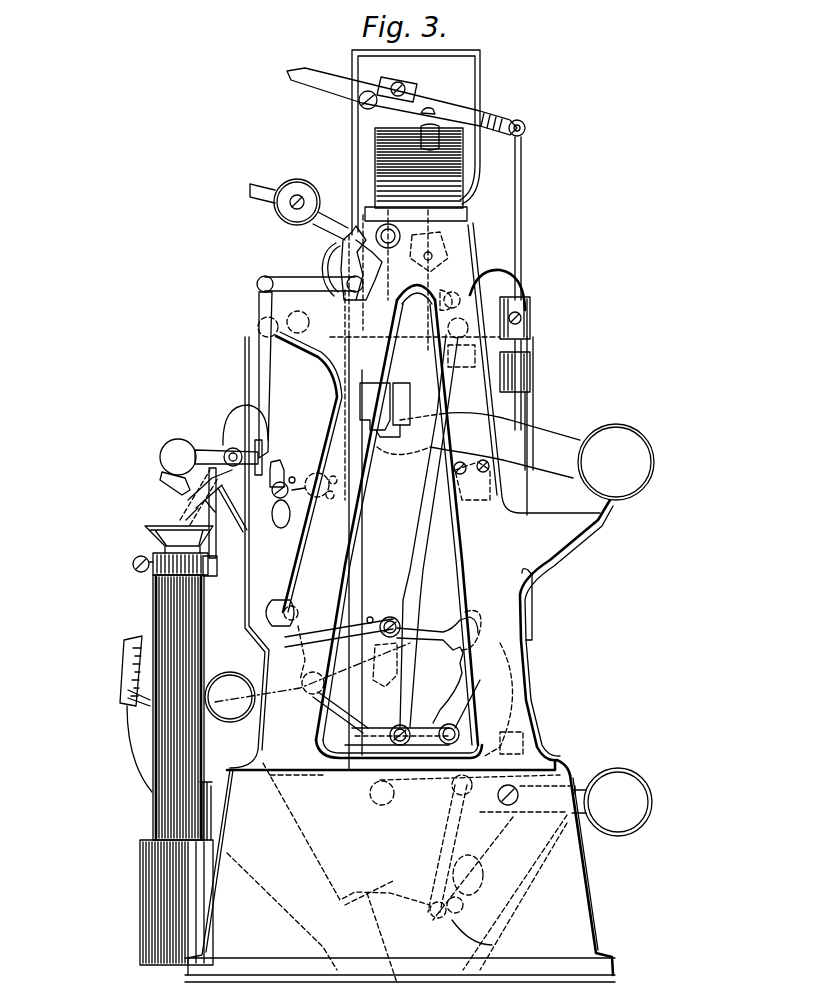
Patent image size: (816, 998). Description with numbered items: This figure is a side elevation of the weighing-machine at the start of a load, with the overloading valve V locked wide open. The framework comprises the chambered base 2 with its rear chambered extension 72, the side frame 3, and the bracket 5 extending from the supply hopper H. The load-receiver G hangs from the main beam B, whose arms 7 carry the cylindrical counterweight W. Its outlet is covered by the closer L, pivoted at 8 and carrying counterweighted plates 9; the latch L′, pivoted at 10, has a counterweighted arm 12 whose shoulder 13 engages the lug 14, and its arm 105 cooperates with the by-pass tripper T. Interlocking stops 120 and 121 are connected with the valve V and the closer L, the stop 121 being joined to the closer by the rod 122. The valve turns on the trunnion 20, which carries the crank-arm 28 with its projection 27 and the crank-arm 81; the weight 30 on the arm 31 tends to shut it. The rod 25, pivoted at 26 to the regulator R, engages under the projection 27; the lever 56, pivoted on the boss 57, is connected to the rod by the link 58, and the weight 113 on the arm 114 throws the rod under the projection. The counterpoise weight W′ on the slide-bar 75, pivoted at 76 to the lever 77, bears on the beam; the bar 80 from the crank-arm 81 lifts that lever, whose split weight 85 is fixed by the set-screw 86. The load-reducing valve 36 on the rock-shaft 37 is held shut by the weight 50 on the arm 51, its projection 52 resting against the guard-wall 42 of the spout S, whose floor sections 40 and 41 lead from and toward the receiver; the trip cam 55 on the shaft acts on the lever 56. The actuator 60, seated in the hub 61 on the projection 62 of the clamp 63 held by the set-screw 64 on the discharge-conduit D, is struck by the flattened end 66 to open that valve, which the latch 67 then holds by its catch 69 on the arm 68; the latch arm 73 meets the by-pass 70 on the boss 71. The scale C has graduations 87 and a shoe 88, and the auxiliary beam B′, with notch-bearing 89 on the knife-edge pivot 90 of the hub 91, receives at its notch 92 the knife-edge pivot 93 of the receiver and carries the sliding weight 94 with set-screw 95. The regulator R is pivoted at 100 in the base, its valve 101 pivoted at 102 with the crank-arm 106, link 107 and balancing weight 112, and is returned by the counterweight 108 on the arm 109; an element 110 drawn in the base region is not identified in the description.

The supply hopper H is at (416, 142).
The bracket 5 is at (455, 182).
The shifting bar 80 is at (440, 150).
The crank-arm 28 is at (374, 210).
The oscillatory lever 77 is at (445, 112).
The pivot 76 is at (526, 124).
The set-screw 86 is at (390, 90).
The slidable split weight 85 is at (410, 88).
The slide-bar 75 is at (522, 208).
The counterpoise weight W′ is at (531, 306).
The interlocking stop 121 is at (480, 268).
The weight 30 is at (290, 190).
The arm 31 is at (250, 190).
The projection 27 is at (348, 228).
The stop-rod 25 is at (350, 246).
The valve-trunnion 20 is at (392, 226).
The interlocking stop 120 is at (450, 240).
The crank-arm 81 is at (408, 300).
The rod 122 is at (424, 486).
The main beam B is at (478, 445).
The counterweight W is at (642, 460).
The longitudinal arms 7 is at (520, 448).
The side frame 3 is at (528, 680).
The base 2 is at (588, 870).
The counterweighted plates 9 is at (478, 748).
The latch L′ is at (383, 615).
The pivot 10 is at (404, 624).
The counterweighted arm 12 is at (474, 622).
The knife-edge pivot 93 is at (408, 665).
The notch 92 is at (388, 672).
The shoulder 13 is at (445, 660).
The lug 14 is at (470, 660).
The pivot 8 is at (462, 730).
The closer L is at (397, 727).
The arm 105 is at (345, 635).
The tripper T is at (293, 610).
The auxiliary beam B′ is at (237, 690).
The set-screw 95 is at (220, 692).
The sliding weight 94 is at (228, 722).
The hub 91 is at (332, 726).
The notch-bearing 89 is at (305, 690).
The knife-edge pivot 90 is at (318, 705).
The pivot 26 is at (372, 802).
The load-receiver G is at (244, 352).
The link 58 is at (280, 280).
The arm 114 is at (274, 335).
The boss 57 is at (260, 320).
The weight 113 is at (320, 308).
The lever 56 is at (266, 350).
The valve V is at (322, 262).
The trip device 55 is at (240, 412).
The rock-shaft 37 is at (228, 448).
The arm 68 is at (262, 440).
The weight 50 is at (170, 452).
The arm 51 is at (200, 452).
The flattened end 66 is at (195, 455).
The projection 52 is at (170, 470).
The load-reducing valve 36 is at (190, 494).
The guard-wall 42 is at (182, 496).
The spout-floor section 40 is at (185, 512).
The spout S is at (219, 513).
The spout-floor section 41 is at (258, 510).
The catch 69 is at (276, 462).
The latch 67 is at (272, 490).
The by-pass 70 is at (290, 514).
The arm 73 is at (276, 520).
The boss 71 is at (313, 478).
The actuator 60 is at (166, 529).
The clamp 63 is at (160, 575).
The set-screw 64 is at (133, 566).
The hub 61 is at (218, 568).
The projection 62 is at (185, 575).
The discharge-conduit D is at (156, 628).
The chambered extension 72 is at (160, 898).
The shoe 88 is at (212, 815).
The graduations 87 is at (124, 668).
The scale C is at (128, 716).
The regulator R is at (312, 860).
The regulator-valve 101 is at (395, 880).
The pin 110 is at (337, 922).
The link 107 is at (455, 835).
The weight 112 is at (478, 866).
The pivot 100 is at (515, 790).
The pivot 102 is at (436, 920).
The crank-arm 106 is at (492, 945).
The arm 109 is at (580, 790).
The counterweight 108 is at (638, 780).